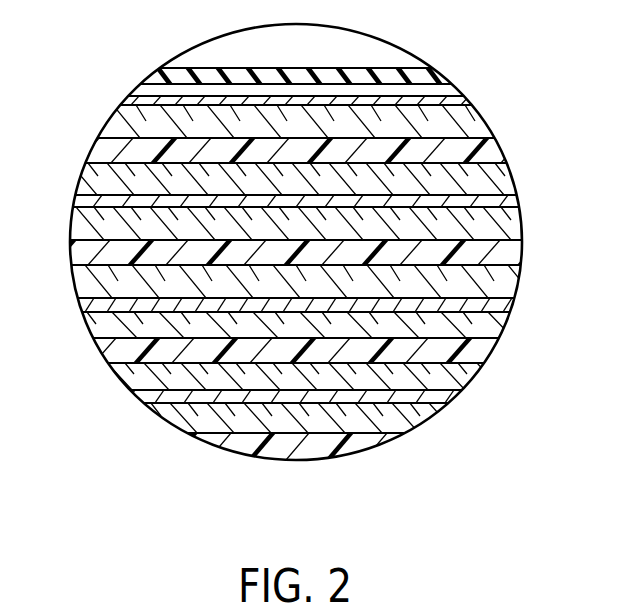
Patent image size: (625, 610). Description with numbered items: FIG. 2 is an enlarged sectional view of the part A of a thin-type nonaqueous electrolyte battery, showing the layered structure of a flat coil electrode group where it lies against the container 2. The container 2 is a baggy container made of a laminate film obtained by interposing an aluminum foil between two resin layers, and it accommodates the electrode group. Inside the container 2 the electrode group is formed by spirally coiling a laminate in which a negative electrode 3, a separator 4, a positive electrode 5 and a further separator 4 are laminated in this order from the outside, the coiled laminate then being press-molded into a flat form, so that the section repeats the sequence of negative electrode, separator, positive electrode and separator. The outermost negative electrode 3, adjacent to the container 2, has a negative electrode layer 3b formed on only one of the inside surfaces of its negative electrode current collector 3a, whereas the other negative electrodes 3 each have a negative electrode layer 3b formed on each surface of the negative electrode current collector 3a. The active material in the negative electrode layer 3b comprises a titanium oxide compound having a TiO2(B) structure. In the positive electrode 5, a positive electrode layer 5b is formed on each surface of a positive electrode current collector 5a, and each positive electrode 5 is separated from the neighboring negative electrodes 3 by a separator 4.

The part A is at (198, 66).
The container 2 is at (430, 78).
The negative electrode 3 is at (553, 46).
The negative electrode current collector 3a is at (452, 102).
The negative electrode layer 3b is at (455, 123).
The separator 4 is at (113, 150).
The positive electrode 5 is at (581, 139).
The positive electrode current collector 5a is at (490, 202).
The positive electrode layer 5b is at (482, 183).